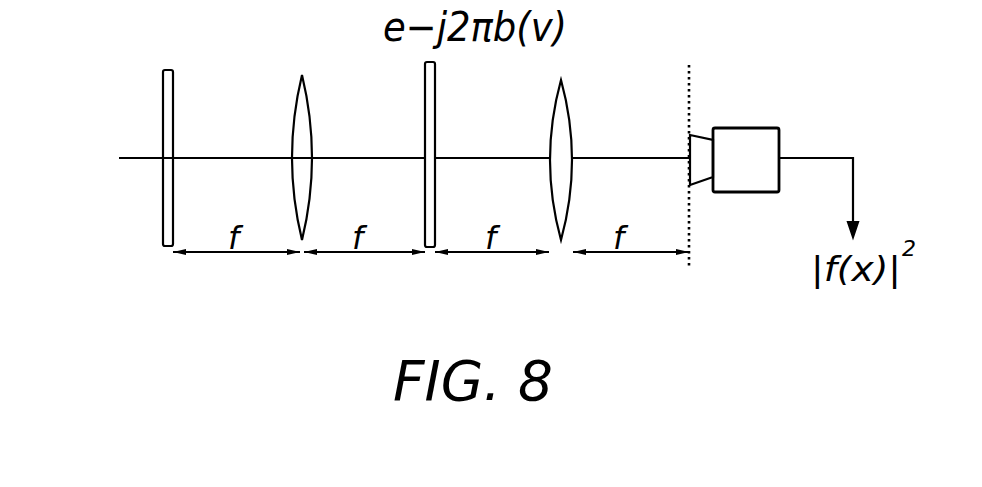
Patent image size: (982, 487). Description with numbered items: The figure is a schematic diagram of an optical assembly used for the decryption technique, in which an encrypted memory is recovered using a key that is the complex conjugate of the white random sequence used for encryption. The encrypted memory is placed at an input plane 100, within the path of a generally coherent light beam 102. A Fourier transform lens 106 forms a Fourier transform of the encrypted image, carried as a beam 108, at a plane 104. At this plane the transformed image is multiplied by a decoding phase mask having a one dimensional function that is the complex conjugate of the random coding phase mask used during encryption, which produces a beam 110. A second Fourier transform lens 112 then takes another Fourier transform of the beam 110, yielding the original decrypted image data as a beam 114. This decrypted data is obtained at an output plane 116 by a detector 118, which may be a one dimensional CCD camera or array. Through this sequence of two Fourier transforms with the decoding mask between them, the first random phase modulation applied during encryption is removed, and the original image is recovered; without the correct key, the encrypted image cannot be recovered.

The input plane 100 is at (175, 85).
The coherent light beam 102 is at (142, 158).
The plane 104 is at (437, 117).
The Fourier transform lens 106 is at (305, 102).
The beam 108 is at (333, 158).
The beam 110 is at (455, 158).
The Fourier transform lens 112 is at (568, 108).
The beam 114 is at (590, 158).
The output plane 116 is at (692, 218).
The detector 118 is at (740, 128).